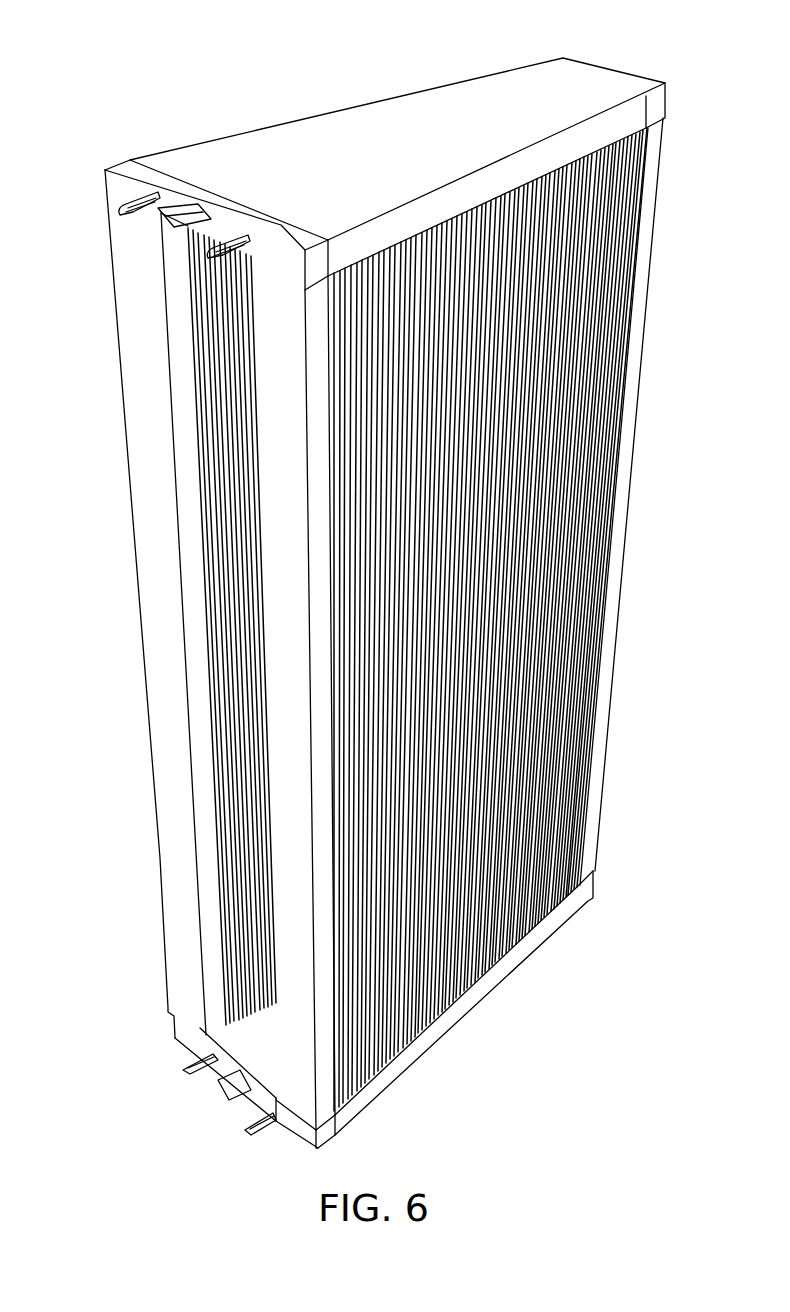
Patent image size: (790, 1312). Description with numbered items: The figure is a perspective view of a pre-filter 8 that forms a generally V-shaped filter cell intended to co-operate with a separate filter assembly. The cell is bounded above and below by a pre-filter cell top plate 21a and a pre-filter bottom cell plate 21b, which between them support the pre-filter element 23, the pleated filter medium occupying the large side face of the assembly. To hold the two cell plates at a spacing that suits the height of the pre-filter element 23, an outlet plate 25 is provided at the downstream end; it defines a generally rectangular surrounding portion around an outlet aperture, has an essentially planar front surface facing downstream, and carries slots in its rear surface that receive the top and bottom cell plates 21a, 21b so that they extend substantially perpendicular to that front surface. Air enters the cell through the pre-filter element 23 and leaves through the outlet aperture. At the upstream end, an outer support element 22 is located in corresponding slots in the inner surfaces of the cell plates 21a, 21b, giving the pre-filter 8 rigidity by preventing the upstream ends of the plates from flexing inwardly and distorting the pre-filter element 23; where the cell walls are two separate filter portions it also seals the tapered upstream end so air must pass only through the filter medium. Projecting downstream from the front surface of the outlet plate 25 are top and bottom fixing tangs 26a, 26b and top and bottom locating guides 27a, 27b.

The pre-filter 8 is at (336, 101).
The pre-filter cell top plate 21a is at (567, 62).
The pre-filter bottom cell plate 21b is at (540, 920).
The outer support element 22 is at (648, 238).
The pre-filter element 23 is at (608, 374).
The outlet plate 25 is at (283, 1117).
The top fixing tang 26a is at (185, 212).
The bottom fixing tang 26b is at (217, 1080).
The top locating guide 27a is at (115, 200).
The bottom locating guide 27b is at (175, 1062).